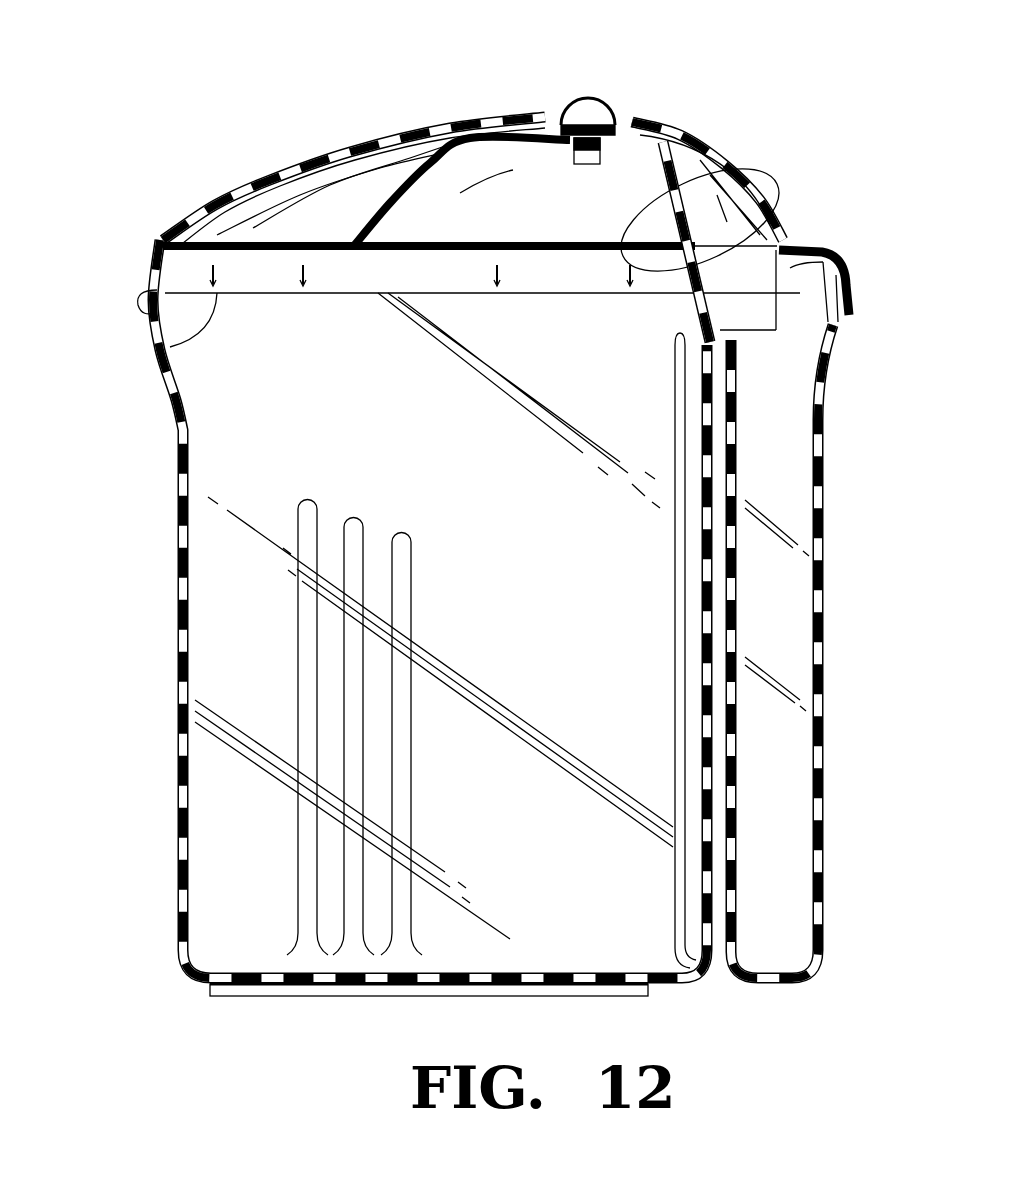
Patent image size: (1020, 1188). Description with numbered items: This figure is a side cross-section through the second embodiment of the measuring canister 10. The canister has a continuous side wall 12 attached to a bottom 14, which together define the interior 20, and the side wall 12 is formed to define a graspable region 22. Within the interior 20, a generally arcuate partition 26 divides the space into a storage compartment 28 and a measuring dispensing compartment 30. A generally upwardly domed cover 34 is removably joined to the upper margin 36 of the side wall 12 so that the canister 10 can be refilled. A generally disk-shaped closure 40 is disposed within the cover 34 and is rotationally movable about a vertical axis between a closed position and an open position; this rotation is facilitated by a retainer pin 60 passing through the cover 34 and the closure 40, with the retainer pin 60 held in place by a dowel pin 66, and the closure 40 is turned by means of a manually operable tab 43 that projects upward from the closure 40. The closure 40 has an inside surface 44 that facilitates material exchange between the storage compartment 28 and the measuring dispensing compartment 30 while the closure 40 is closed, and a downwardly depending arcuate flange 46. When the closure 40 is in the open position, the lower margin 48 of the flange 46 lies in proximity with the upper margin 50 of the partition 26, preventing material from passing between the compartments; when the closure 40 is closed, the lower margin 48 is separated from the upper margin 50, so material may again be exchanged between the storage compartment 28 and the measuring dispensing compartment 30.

The measuring canister 10 is at (185, 130).
The side wall 12 is at (178, 612).
The bottom 14 is at (600, 997).
The interior 20 is at (615, 557).
The graspable region 22 is at (348, 885).
The partition 26 is at (712, 478).
The storage compartment 28 is at (492, 511).
The measuring dispensing compartment 30 is at (790, 745).
The cover 34 is at (343, 150).
The upper margin 36 is at (160, 352).
The closure 40 is at (500, 135).
The tab 43 is at (785, 215).
The inside surface 44 is at (632, 228).
The flange 46 is at (772, 215).
The lower margin 48 is at (787, 238).
The upper margin 50 is at (830, 335).
The retainer pin 60 is at (598, 98).
The dowel pin 66 is at (503, 118).